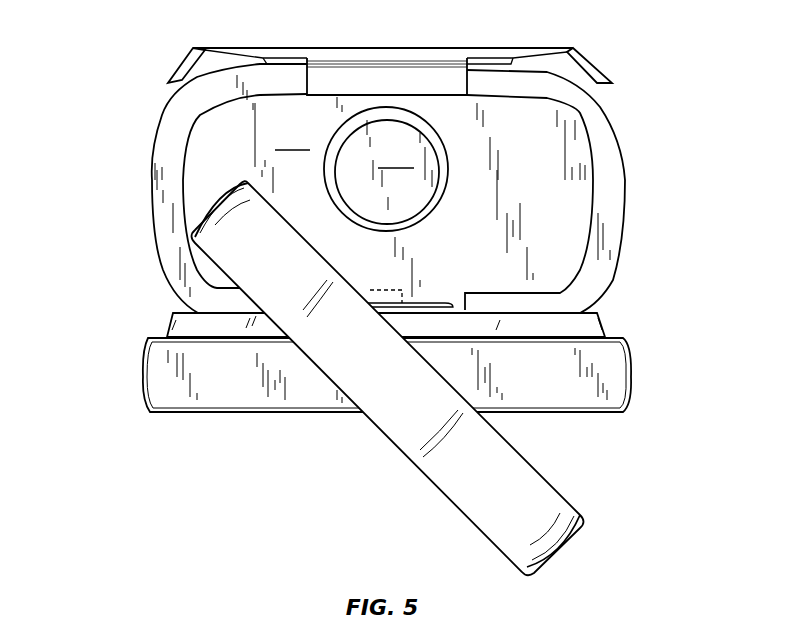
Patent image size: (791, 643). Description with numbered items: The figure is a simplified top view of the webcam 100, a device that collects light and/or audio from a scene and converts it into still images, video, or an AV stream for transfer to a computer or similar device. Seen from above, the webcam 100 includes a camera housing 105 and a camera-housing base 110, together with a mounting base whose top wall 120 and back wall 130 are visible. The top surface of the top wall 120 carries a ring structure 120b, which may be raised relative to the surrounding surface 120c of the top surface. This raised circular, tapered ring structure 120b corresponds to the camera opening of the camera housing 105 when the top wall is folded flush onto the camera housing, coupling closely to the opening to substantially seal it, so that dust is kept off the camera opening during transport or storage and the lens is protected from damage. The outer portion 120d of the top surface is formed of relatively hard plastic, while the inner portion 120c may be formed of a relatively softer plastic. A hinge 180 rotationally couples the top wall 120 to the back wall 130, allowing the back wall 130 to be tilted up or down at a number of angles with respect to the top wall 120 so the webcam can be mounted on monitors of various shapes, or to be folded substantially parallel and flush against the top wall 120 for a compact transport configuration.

The webcam 100 is at (100, 335).
The camera housing 105 is at (528, 463).
The camera-housing base 110 is at (632, 377).
The top wall 120 is at (613, 263).
The ring structure 120b is at (423, 212).
The surrounding surface (inner portion of top surface) 120c is at (344, 150).
The outer portion of top surface 120d is at (613, 210).
The back wall 130 is at (598, 68).
The hinge 180 is at (398, 70).